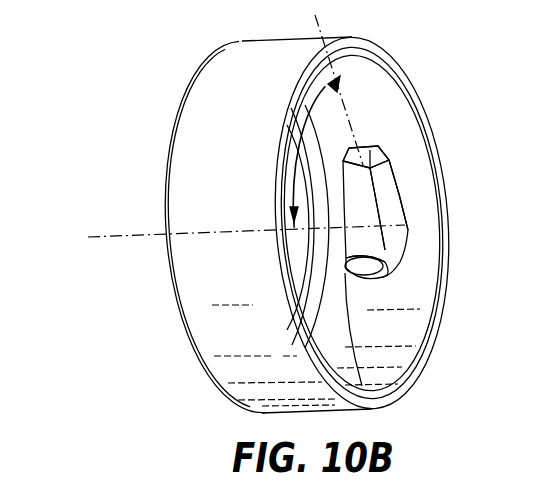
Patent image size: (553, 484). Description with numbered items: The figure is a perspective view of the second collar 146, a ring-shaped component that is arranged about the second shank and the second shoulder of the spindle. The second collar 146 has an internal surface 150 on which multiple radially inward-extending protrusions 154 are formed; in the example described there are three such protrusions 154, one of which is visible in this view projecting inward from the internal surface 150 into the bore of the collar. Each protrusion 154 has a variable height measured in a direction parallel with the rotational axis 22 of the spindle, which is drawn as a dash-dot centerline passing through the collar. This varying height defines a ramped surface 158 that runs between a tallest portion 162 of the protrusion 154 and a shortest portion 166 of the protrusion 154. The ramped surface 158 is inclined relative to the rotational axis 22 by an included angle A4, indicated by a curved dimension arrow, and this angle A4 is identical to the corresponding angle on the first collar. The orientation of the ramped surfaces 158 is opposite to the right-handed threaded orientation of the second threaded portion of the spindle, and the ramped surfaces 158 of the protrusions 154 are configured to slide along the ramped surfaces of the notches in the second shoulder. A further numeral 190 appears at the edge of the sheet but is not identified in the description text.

The second collar 146 is at (222, 94).
The internal surface 150 is at (363, 72).
The rotational axis 22 is at (137, 232).
The included angle A4 is at (313, 110).
The ramped surface 158 is at (390, 200).
The shortest portion 166 is at (378, 147).
The tallest portion 162 is at (407, 238).
The protrusion 154 is at (373, 277).
The ring assembly 190 is at (429, 476).